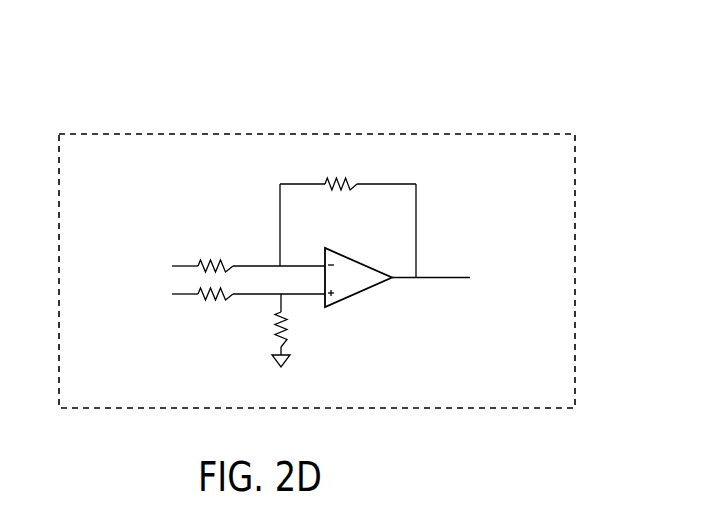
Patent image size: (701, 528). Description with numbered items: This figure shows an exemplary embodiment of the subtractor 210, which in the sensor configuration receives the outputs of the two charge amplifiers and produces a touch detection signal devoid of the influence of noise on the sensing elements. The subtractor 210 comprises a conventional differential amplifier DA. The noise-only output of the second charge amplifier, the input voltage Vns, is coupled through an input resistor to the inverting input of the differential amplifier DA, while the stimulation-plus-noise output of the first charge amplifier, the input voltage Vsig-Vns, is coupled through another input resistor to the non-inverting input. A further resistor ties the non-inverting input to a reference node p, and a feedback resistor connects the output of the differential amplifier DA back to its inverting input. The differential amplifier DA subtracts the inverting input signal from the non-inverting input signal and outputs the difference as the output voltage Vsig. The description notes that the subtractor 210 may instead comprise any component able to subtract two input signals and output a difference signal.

The subtractor 210 is at (133, 130).
The differential amplifier DA is at (358, 277).
The ground node p is at (288, 333).
The output signal voltage Vsig is at (449, 280).
The noise voltage input Vns is at (232, 260).
The signal plus noise input Vsig-Vns is at (213, 289).